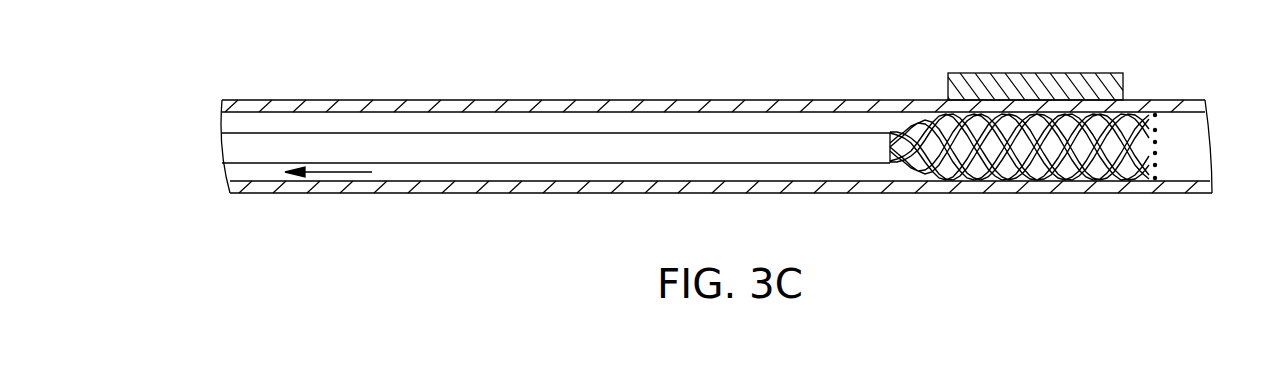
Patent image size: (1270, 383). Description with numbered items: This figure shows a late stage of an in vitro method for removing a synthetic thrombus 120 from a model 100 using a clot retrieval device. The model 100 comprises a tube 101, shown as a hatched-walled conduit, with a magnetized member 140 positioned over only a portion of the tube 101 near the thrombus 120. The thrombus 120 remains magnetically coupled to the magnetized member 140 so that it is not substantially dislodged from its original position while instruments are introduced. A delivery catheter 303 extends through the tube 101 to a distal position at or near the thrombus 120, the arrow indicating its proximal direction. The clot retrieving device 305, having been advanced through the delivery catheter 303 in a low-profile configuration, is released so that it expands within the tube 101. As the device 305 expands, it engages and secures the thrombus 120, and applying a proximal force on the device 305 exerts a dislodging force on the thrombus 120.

The model 100 is at (716, 134).
The tube 101 is at (627, 100).
The delivery catheter 303 is at (452, 155).
The synthetic thrombus 120 is at (1031, 145).
The clot retrieving device 305 is at (1072, 118).
The magnetized member 140 is at (1027, 85).